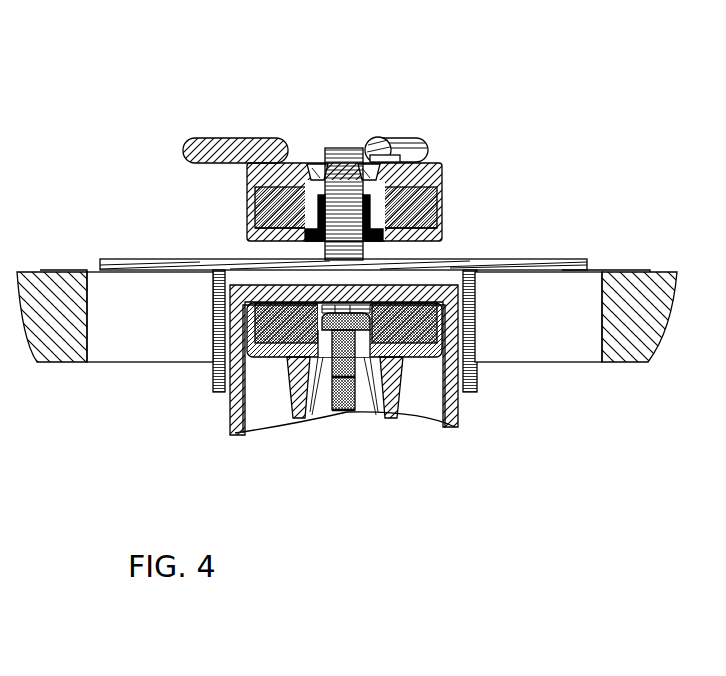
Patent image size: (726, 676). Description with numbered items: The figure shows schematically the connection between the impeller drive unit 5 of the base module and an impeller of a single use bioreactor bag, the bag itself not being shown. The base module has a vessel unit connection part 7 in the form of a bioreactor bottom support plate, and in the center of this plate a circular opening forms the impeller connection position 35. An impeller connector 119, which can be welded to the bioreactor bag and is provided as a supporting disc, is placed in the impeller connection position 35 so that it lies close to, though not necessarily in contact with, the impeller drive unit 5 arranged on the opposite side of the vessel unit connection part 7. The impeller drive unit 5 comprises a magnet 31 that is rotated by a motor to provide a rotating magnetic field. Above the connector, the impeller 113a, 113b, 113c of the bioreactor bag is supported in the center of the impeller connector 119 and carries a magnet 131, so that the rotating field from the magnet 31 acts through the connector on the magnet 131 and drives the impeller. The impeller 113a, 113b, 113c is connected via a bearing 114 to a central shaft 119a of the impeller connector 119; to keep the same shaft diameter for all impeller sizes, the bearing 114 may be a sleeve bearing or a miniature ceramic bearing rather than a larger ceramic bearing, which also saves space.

The impeller drive unit 5 is at (354, 452).
The vessel unit connection part 7 is at (675, 278).
The magnet 31 is at (410, 325).
The impeller connection position 35 is at (149, 302).
The impeller 113a is at (196, 121).
The impeller 113b is at (235, 150).
The impeller 113c is at (237, 142).
The bearing 114 is at (318, 228).
The impeller connector 119 is at (485, 258).
The central shaft 119a is at (341, 139).
The magnet 131 is at (290, 195).